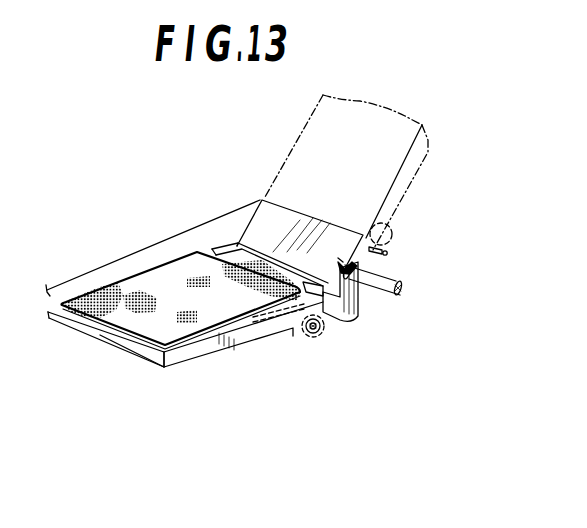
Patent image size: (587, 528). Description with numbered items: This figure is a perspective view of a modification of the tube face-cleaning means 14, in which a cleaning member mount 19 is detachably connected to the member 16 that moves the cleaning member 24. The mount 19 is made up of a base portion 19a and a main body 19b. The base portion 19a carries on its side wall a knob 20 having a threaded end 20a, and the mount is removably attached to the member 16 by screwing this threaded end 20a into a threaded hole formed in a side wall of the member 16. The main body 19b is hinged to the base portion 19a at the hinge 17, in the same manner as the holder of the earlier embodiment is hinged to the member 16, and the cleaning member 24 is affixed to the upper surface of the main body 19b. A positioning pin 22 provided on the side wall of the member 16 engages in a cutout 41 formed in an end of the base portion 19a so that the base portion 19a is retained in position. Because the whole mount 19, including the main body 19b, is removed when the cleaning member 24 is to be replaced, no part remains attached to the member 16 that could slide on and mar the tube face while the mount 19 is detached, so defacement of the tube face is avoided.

The cleaning means 14 is at (262, 196).
The member for moving the cleaning member 16 is at (300, 157).
The hinge 17 is at (317, 340).
The cleaning member mount 19 is at (161, 242).
The base portion 19a is at (347, 313).
The main body 19b is at (145, 349).
The knob 20 is at (400, 289).
The threaded end 20a is at (343, 262).
The positioning pin 22 is at (388, 252).
The cleaning member 24 is at (205, 310).
The cutout 41 is at (391, 224).